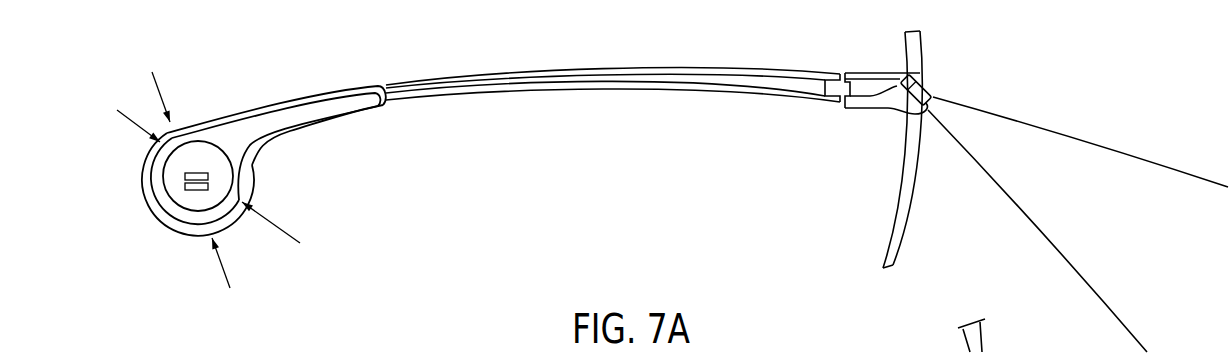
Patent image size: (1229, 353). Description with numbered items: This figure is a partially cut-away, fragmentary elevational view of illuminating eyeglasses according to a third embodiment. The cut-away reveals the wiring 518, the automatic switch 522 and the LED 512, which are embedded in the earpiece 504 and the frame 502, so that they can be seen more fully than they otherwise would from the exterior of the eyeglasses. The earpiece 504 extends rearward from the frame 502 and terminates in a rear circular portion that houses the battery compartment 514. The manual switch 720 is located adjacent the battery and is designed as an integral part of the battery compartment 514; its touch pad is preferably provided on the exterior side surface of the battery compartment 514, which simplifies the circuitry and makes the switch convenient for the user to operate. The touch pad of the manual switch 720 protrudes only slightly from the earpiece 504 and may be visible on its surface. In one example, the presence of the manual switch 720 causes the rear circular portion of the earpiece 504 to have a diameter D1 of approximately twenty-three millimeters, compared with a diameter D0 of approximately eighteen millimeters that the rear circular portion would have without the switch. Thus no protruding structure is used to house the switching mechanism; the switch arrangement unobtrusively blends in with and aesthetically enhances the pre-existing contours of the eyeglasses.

The manual switch 720 is at (170, 183).
The battery compartment 514 is at (180, 222).
The earpiece 504 is at (440, 97).
The wiring 518 is at (643, 73).
The automatic switch 522 is at (838, 108).
The frame 502 is at (872, 72).
The LED 512 is at (937, 93).
The diameter with switch D1 is at (160, 90).
The diameter without switch D0 is at (130, 122).